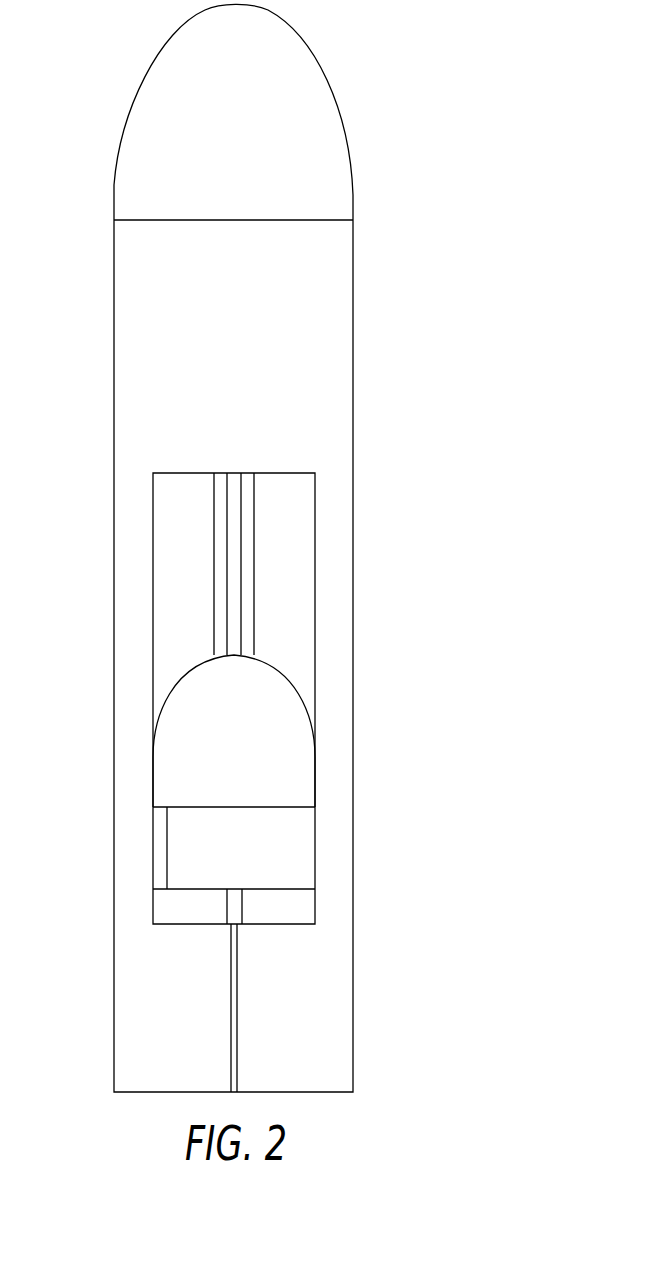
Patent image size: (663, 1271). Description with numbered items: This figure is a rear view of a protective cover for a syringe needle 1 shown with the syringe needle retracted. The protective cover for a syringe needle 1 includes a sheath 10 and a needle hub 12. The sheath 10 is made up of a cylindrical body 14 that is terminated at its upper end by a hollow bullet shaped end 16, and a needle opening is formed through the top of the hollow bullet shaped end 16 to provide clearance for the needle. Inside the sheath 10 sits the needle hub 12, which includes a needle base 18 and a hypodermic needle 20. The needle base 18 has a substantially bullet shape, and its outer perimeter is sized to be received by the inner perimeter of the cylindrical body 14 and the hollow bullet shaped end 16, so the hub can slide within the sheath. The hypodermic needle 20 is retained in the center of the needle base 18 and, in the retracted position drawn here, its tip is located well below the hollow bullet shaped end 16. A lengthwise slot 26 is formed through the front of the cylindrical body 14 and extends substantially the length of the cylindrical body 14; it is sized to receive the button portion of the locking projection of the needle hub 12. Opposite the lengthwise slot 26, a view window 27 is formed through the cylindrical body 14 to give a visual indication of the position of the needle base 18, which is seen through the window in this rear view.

The protective cover for a syringe needle 1 is at (455, 230).
The hollow bullet shaped end 16 is at (328, 78).
The cylindrical body 14 is at (354, 398).
The sheath 10 is at (390, 780).
The view window 27 is at (315, 563).
The lengthwise slot 26 is at (218, 516).
The hypodermic needle 20 is at (236, 580).
The needle hub 12 is at (289, 656).
The needle base 18 is at (303, 770).